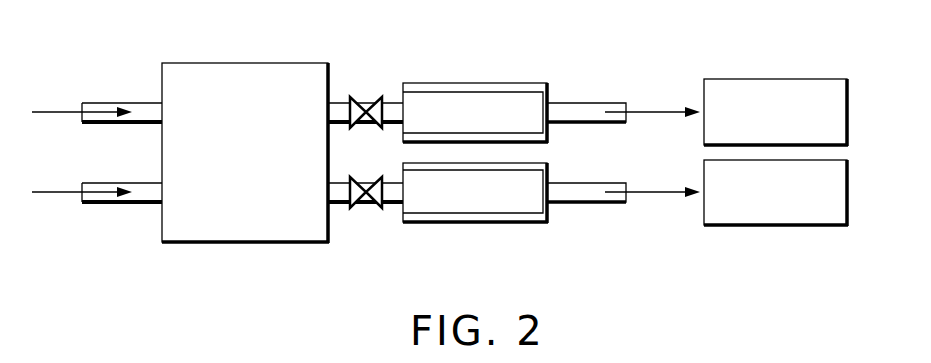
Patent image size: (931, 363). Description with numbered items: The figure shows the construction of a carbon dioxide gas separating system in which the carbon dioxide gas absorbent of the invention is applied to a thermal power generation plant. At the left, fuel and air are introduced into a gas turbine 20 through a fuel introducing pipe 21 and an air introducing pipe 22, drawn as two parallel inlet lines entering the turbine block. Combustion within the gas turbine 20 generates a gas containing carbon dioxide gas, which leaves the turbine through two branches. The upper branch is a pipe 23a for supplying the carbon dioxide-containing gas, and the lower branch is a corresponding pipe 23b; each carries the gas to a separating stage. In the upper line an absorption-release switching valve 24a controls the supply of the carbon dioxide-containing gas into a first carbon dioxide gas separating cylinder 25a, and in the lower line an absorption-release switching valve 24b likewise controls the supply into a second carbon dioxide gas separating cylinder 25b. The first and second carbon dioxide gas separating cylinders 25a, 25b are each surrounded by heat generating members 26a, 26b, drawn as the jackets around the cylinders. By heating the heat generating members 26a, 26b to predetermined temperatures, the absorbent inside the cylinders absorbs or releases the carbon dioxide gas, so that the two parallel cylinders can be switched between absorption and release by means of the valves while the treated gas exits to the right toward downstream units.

The gas turbine 20 is at (257, 243).
The fuel introducing pipe 21 is at (130, 105).
The air introducing pipe 22 is at (135, 205).
The pipe for supplying a gas containing a carbon dioxide gas 23a is at (341, 110).
The absorption-release switching valve 24a is at (370, 100).
The first carbon dioxide gas separating cylinder 25a is at (528, 100).
The heat generating member 26a is at (507, 88).
The pipe for supplying a gas containing a carbon dioxide gas 23b is at (340, 195).
The absorption-release switching valve 24b is at (373, 200).
The second carbon dioxide gas separating cylinder 25b is at (527, 205).
The heat generating member 26b is at (509, 215).